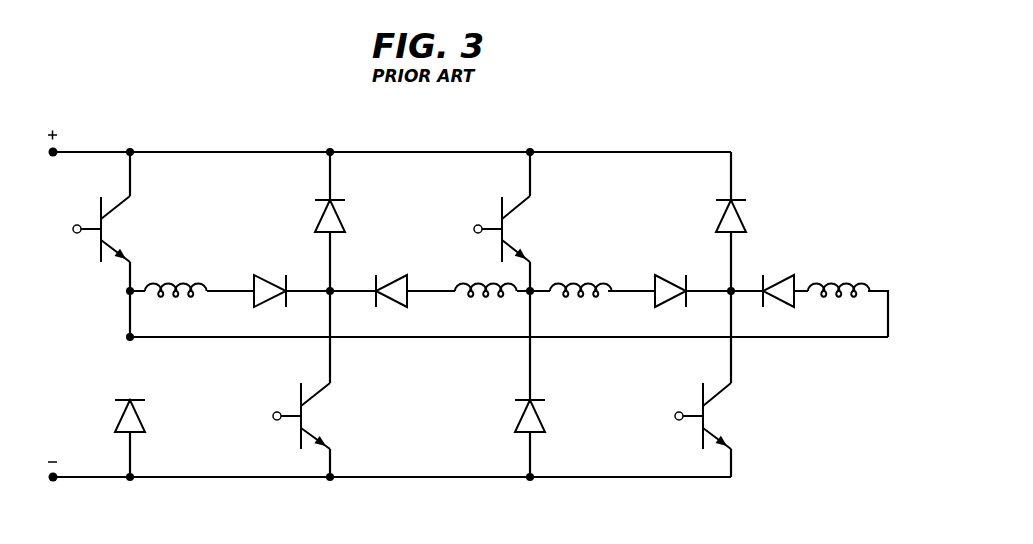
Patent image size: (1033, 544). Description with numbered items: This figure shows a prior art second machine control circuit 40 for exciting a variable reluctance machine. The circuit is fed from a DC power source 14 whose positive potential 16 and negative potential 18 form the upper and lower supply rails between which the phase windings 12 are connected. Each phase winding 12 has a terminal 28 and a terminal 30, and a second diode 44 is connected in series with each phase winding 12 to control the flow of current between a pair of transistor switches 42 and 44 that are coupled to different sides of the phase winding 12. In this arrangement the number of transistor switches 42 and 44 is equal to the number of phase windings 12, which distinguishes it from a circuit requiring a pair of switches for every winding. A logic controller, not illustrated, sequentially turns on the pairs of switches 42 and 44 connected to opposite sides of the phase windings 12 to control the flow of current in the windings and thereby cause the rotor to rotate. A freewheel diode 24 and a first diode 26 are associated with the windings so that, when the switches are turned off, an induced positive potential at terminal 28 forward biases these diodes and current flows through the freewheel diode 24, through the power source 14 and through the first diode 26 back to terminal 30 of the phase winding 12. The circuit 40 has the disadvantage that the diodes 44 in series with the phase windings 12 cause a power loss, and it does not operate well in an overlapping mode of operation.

The phase winding 12 is at (183, 286).
The DC power source 14 is at (100, 326).
The positive potential 16 is at (58, 150).
The negative potential 18 is at (53, 480).
The freewheel diode 24 is at (340, 218).
The first diode 26 is at (143, 414).
The terminal of the phase winding 28 is at (228, 293).
The terminal of the phase winding 30 is at (128, 291).
The second machine control circuit 40 is at (260, 150).
The transistor switch 42 is at (99, 243).
The transistor switch / second diode 44 is at (266, 277).